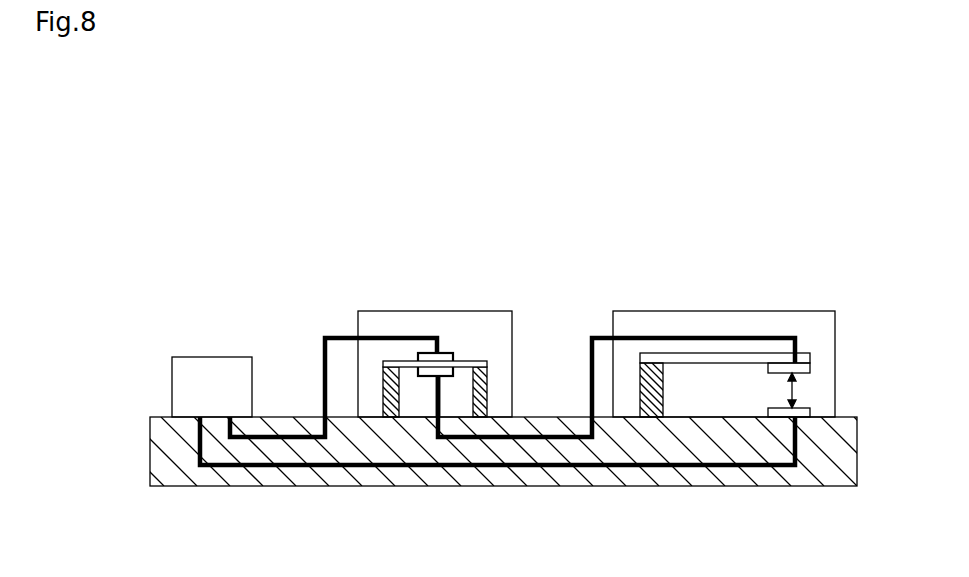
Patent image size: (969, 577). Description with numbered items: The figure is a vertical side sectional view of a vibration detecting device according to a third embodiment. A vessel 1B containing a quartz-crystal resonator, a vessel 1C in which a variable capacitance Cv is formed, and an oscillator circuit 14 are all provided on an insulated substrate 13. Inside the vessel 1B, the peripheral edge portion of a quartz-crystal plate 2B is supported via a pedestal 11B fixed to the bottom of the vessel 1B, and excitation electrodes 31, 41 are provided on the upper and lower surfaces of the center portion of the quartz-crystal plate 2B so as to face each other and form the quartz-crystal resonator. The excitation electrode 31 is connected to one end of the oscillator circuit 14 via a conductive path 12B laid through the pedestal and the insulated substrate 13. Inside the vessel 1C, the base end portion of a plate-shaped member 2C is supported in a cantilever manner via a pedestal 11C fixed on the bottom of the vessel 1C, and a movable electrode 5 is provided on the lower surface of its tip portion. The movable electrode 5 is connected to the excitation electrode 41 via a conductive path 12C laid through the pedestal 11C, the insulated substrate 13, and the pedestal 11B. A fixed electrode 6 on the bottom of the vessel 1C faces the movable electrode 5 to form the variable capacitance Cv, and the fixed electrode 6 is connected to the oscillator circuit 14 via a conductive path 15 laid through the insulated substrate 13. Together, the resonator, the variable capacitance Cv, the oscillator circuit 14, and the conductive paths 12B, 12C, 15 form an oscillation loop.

The oscillator circuit 14 is at (210, 357).
The conductive path 12B is at (333, 336).
The vessel 1B is at (383, 311).
The excitation electrode 31 is at (447, 353).
The quartz-crystal plate 2B is at (460, 361).
The excitation electrode 41 is at (448, 383).
The conductive path 12C is at (645, 337).
The vessel 1C is at (713, 311).
The plate-shaped member 2C is at (745, 353).
The movable electrode 5 is at (798, 377).
The variable capacitance Cv is at (798, 392).
The fixed electrode 6 is at (798, 408).
The pedestal 11B is at (383, 393).
The conductive path 15 is at (523, 465).
The pedestal 11C is at (663, 393).
The insulated substrate 13 is at (812, 486).